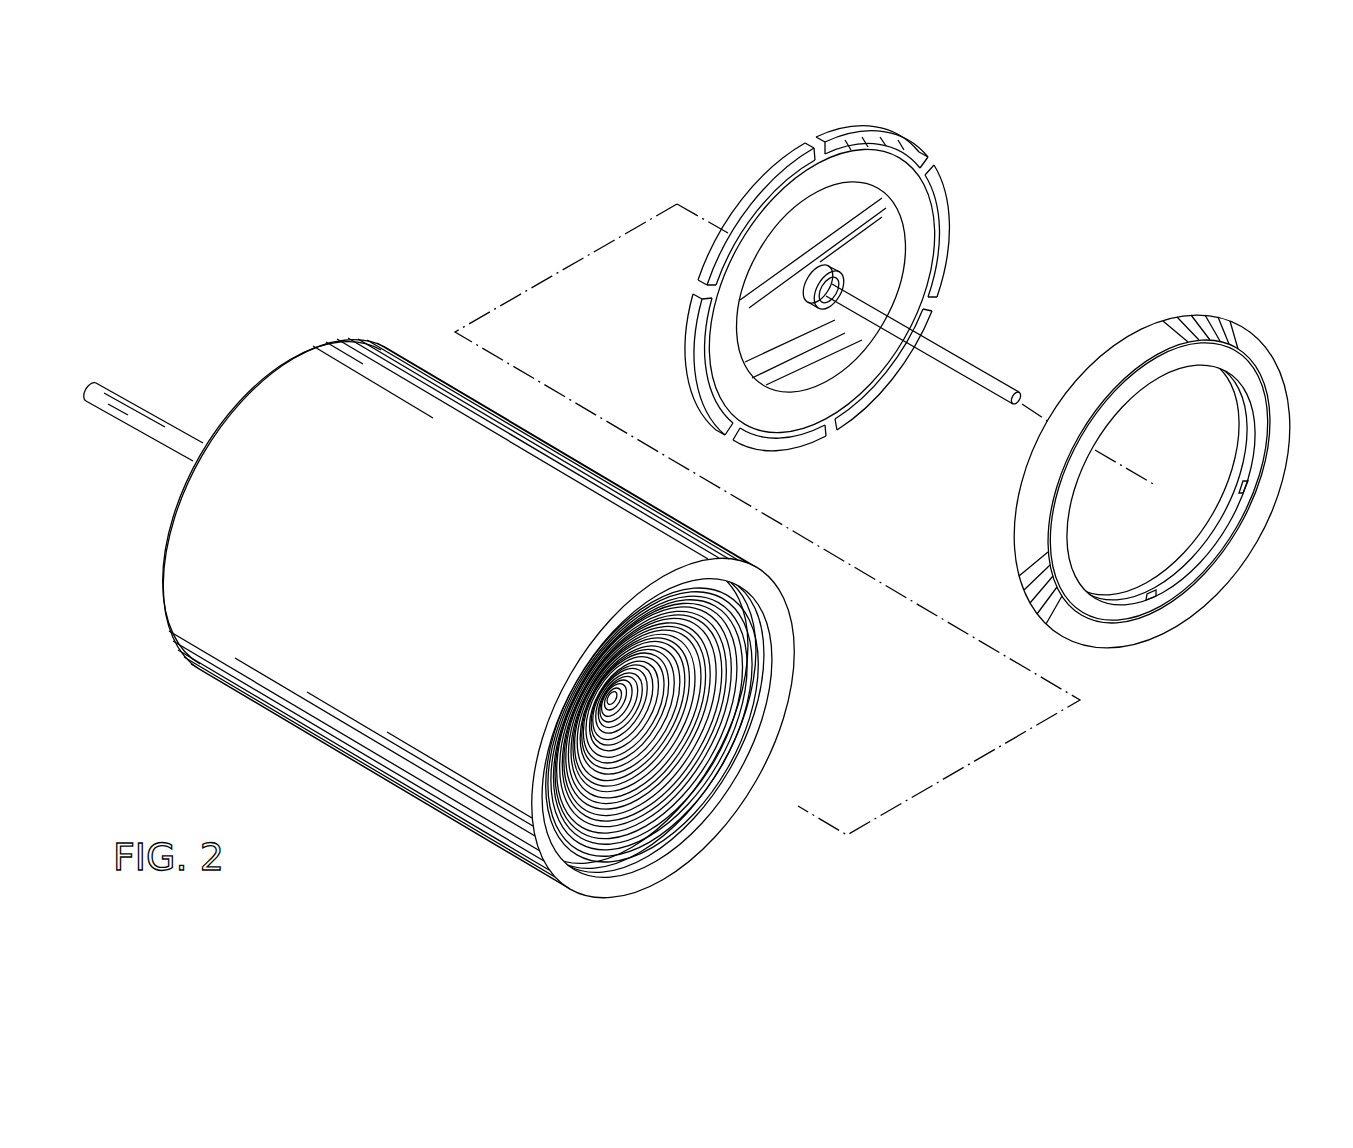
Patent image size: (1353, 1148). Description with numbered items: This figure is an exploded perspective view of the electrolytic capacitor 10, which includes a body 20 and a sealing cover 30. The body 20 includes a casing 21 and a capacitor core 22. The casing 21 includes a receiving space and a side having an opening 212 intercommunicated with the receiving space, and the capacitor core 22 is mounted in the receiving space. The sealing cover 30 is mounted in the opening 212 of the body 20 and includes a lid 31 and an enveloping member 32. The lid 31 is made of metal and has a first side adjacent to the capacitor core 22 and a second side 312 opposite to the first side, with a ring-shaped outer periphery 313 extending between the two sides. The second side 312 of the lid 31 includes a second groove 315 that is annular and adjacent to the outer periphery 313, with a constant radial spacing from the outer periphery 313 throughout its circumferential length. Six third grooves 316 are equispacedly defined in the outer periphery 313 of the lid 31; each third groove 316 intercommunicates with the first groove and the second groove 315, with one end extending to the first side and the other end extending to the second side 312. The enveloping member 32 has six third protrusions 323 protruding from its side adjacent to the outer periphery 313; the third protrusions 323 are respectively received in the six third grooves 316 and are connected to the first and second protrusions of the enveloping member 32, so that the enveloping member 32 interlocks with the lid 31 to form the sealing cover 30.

The electrolytic capacitor 10 is at (1132, 212).
The body 20 is at (418, 338).
The casing 21 is at (300, 395).
The capacitor core 22 is at (705, 651).
The opening 212 is at (748, 718).
The sealing cover 30 is at (1052, 245).
The lid 31 is at (945, 293).
The second side 312 is at (872, 238).
The outer periphery 313 is at (862, 122).
The second groove 315 is at (896, 152).
The third groove 316 is at (803, 150).
The enveloping member 32 is at (1200, 303).
The third protrusion 323 is at (1240, 496).